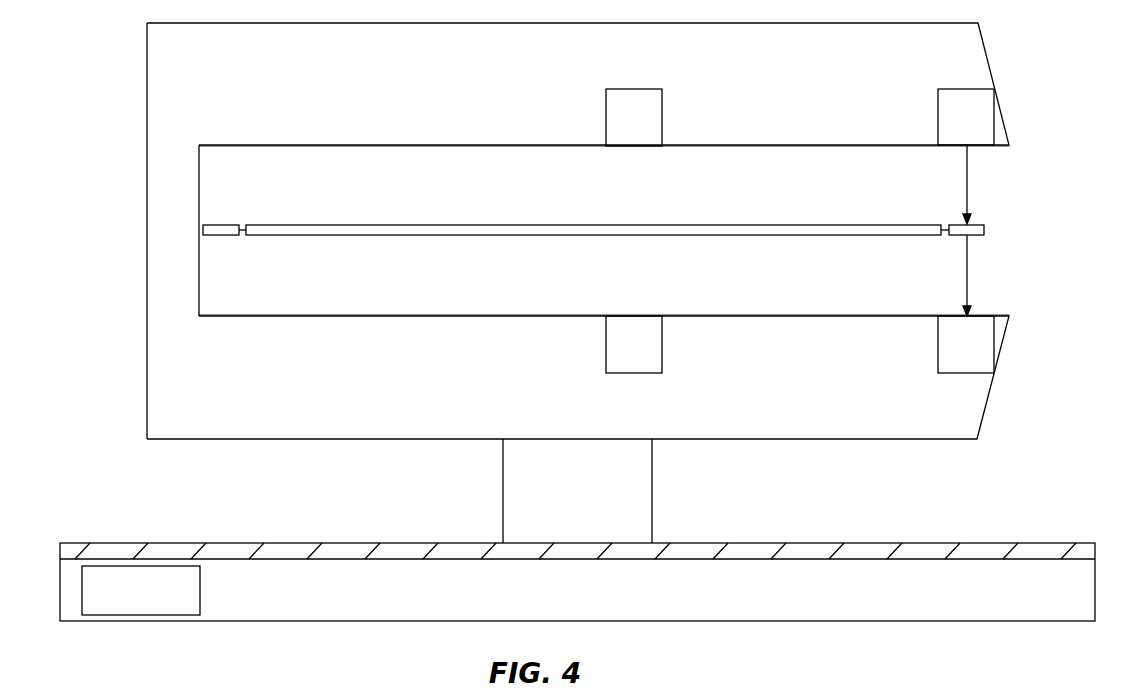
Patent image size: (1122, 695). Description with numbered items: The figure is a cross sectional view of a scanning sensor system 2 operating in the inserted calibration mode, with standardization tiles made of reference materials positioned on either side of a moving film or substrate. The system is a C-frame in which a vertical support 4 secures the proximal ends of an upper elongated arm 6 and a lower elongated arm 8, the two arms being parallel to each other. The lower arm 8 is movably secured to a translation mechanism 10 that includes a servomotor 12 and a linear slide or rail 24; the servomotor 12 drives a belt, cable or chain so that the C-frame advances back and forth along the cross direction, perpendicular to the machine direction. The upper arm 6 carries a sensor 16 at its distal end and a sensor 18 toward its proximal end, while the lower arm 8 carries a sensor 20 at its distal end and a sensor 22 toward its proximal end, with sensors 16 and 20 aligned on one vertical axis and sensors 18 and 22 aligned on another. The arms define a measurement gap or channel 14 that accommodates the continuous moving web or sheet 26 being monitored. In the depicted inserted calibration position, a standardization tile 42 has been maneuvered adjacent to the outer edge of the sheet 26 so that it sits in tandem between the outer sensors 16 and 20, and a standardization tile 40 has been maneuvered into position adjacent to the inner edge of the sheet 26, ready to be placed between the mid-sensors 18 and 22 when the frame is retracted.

The scanning sensor system 2 is at (555, 231).
The vertical support 4 is at (168, 239).
The upper elongated arm 6 is at (484, 102).
The lower elongated arm 8 is at (484, 384).
The translation mechanism 10 is at (575, 602).
The servomotor 12 is at (124, 601).
The measurement gap or channel 14 is at (281, 200).
The sensor 16 is at (938, 102).
The sensor 18 is at (662, 102).
The sensor 20 is at (938, 342).
The sensor 22 is at (662, 341).
The linear slide or rail 24 is at (918, 543).
The web or sheet 26 is at (565, 230).
The standardization tile 40 is at (218, 235).
The standardization tile 42 is at (973, 234).